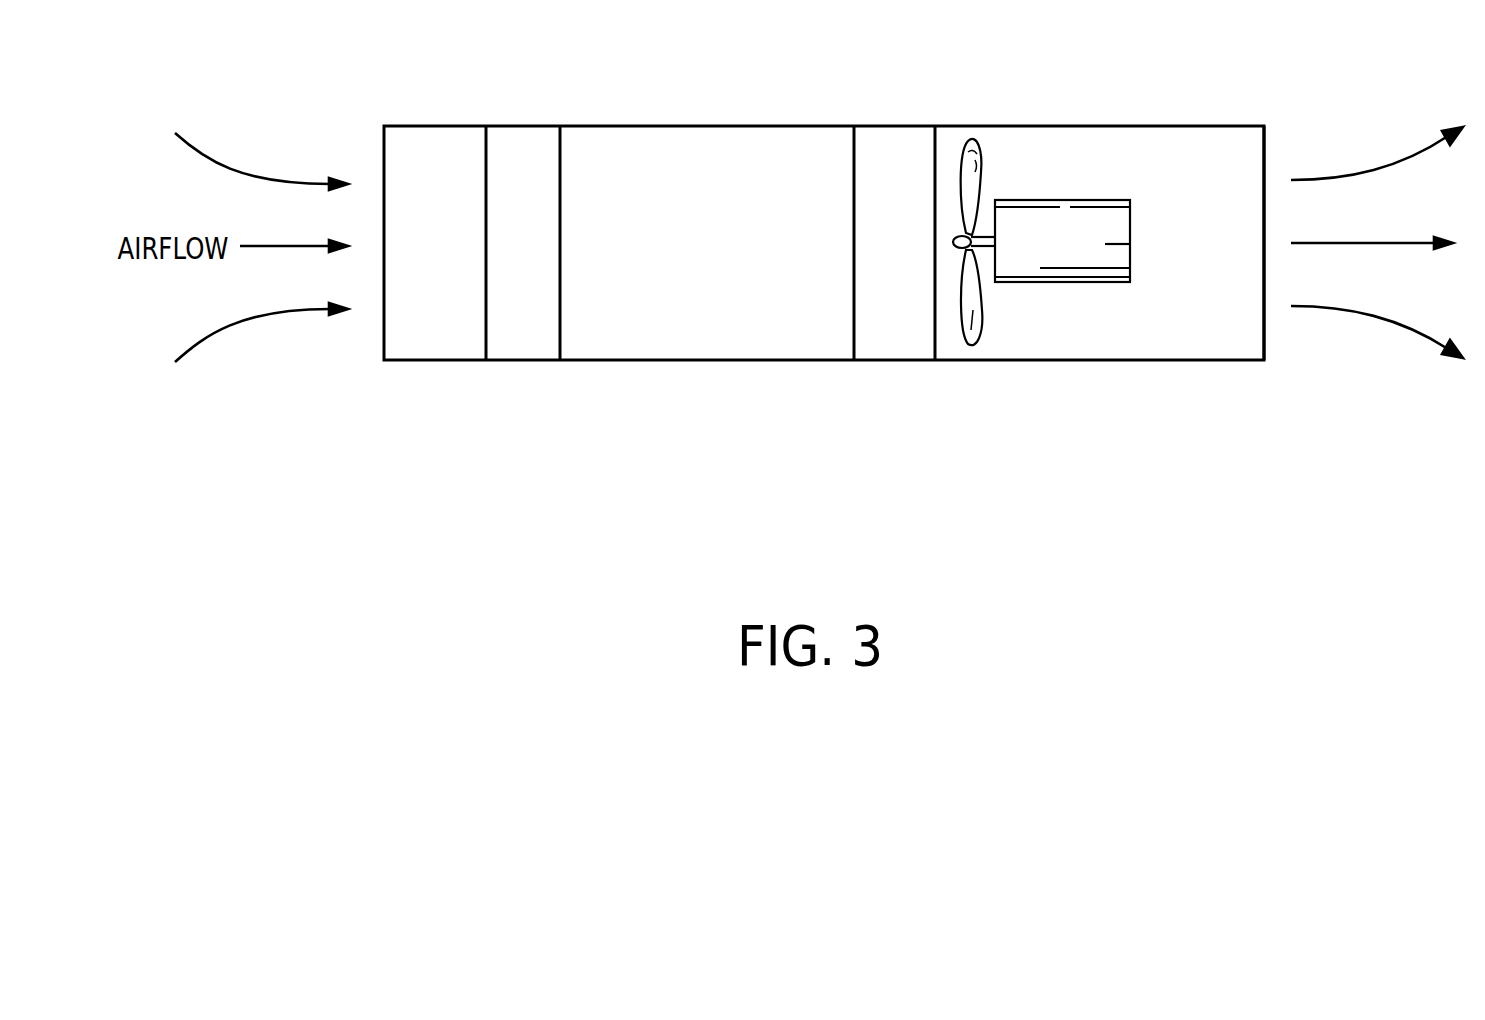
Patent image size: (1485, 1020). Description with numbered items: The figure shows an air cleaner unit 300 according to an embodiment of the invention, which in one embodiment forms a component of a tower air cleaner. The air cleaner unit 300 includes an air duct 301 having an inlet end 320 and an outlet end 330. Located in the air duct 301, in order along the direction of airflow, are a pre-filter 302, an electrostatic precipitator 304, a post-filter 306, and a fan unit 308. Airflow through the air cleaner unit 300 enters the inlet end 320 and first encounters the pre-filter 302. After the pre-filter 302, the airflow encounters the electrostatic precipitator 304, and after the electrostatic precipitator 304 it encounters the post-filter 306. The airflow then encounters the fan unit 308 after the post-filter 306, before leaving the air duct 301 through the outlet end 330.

The air cleaner unit 300 is at (428, 564).
The air duct 301 is at (974, 125).
The pre-filter 302 is at (526, 339).
The electrostatic precipitator 304 is at (698, 339).
The post-filter 306 is at (893, 339).
The fan unit 308 is at (1065, 283).
The inlet end 320 is at (486, 115).
The outlet end 330 is at (1264, 115).